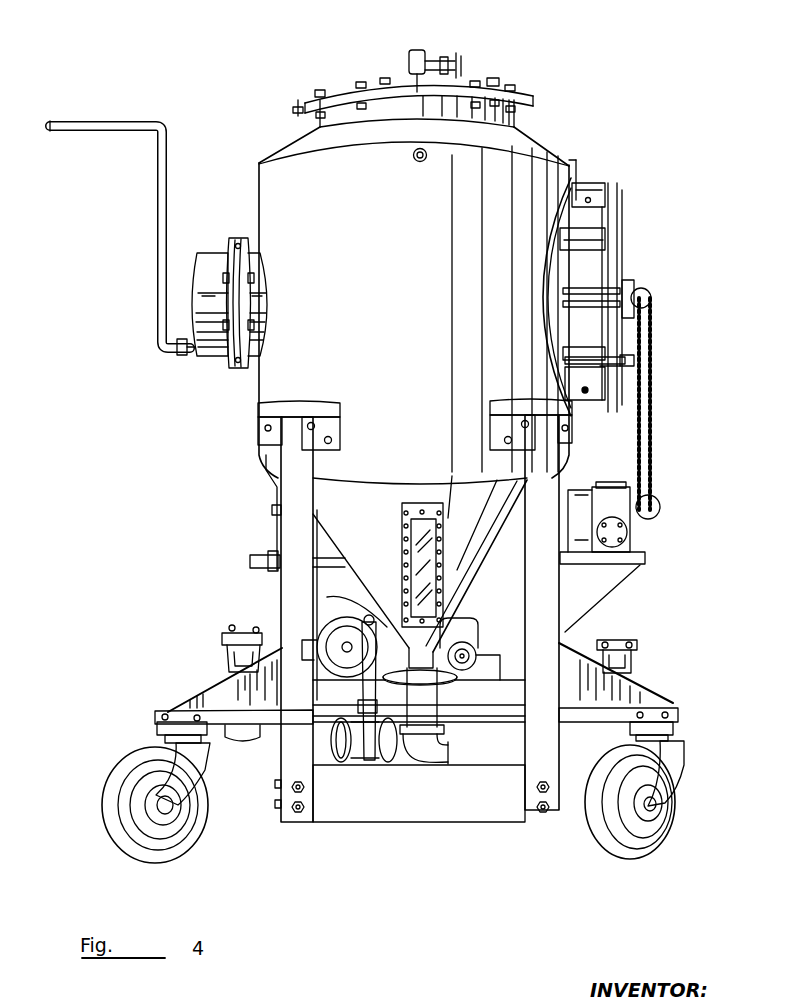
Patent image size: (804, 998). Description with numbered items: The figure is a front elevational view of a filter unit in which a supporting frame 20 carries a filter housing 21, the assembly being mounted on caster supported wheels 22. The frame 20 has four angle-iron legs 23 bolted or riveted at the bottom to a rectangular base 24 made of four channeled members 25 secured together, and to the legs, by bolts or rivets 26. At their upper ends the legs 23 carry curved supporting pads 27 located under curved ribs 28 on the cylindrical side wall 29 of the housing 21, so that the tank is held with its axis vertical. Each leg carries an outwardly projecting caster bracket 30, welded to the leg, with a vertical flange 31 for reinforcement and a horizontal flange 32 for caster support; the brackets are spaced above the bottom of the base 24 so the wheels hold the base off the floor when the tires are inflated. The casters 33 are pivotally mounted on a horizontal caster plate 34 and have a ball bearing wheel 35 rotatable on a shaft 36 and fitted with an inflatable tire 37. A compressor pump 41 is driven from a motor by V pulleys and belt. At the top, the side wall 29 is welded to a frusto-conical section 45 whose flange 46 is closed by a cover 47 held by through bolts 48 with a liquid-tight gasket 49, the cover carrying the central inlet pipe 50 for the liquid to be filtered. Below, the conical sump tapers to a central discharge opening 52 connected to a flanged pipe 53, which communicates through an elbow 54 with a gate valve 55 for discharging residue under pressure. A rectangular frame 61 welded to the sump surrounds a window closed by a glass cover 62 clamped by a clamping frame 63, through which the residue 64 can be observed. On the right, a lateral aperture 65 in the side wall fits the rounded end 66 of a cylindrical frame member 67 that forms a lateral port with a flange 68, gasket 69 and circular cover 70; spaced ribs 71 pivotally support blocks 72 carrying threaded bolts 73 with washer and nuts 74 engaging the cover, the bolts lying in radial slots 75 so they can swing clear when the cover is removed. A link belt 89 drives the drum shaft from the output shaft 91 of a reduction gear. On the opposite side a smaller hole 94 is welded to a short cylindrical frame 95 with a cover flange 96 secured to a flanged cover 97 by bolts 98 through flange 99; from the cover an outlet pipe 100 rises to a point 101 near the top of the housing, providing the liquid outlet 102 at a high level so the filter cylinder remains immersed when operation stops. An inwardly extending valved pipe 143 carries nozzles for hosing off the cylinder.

The supporting frame 20 is at (550, 610).
The filter housing 21 is at (547, 276).
The caster supported wheels 22 is at (664, 756).
The legs 23 is at (281, 586).
The rectangular base 24 is at (393, 810).
The channeled members 25 is at (347, 812).
The bolts or rivets 26 is at (293, 814).
The supporting pads 27 is at (341, 430).
The curved ribs 28 is at (300, 404).
The cylindrical side wall 29 is at (580, 180).
The caster bracket 30 is at (225, 685).
The vertical flange 31 is at (225, 694).
The horizontal flange 32 is at (268, 725).
The casters 33 is at (204, 757).
The horizontal caster plate 34 is at (158, 728).
The ball bearing wheel 35 is at (186, 834).
The shaft 36 is at (180, 810).
The inflatable tire 37 is at (101, 788).
The compressor pump 41 is at (320, 632).
The frusto-conical section 45 is at (536, 144).
The flange 46 is at (496, 80).
The cover 47 is at (380, 84).
The through bolts 48 is at (319, 90).
The liquid-tight gasket 49 is at (300, 106).
The inlet pipe 50 is at (422, 56).
The central discharge opening 52 is at (400, 633).
The flanged pipe 53 is at (462, 640).
The elbow 54 is at (432, 760).
The gate valve 55 is at (380, 751).
The rectangular frame 61 is at (410, 506).
The glass cover 62 is at (438, 532).
The clamping frame 63 is at (403, 549).
The residue 64 is at (440, 598).
The lateral aperture 65 is at (546, 316).
The rounded end 66 is at (548, 338).
The cylindrical frame member 67 is at (548, 292).
The flange 68 is at (610, 220).
The gasket 69 is at (604, 236).
The circular cover 70 is at (620, 206).
The spaced ribs 71 is at (572, 308).
The blocks 72 is at (628, 356).
The threaded bolts 73 is at (612, 370).
The washer and nuts 74 is at (635, 361).
The radial slots 75 is at (645, 290).
The link belt 89 is at (653, 446).
The output shaft 91 is at (660, 510).
The smaller hole 94 is at (266, 302).
The short cylindrical frame 95 is at (262, 263).
The cover flange 96 is at (238, 238).
The flanged cover 97 is at (205, 254).
The bolts 98 is at (254, 328).
The flange 99 is at (220, 357).
The outlet pipe 100 is at (158, 258).
The point 101 is at (160, 122).
The liquid outlet 102 is at (120, 134).
The valved pipe 143 is at (416, 162).